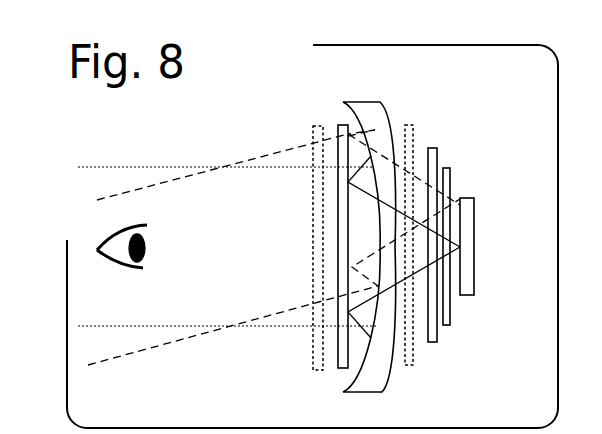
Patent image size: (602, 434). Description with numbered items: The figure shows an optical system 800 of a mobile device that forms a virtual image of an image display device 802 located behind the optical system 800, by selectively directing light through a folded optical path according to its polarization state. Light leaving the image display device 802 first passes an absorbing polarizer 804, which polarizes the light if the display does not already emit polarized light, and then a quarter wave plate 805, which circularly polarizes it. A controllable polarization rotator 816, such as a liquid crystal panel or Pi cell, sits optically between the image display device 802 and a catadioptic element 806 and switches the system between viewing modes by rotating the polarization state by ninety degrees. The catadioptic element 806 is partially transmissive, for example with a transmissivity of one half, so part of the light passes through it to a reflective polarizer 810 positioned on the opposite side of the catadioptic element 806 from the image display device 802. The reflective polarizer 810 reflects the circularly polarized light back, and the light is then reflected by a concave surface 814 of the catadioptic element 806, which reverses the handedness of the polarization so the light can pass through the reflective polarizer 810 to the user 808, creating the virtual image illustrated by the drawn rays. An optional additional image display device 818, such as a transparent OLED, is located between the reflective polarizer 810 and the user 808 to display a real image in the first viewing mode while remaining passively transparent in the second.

The optical system 800 is at (444, 116).
The image display device 802 is at (474, 245).
The absorbing polarizer 804 is at (450, 185).
The quarter wave plate 805 is at (437, 158).
The catadioptic element 806 is at (383, 370).
The user 808 is at (116, 262).
The reflective polarizer 810 is at (343, 369).
The concave surface 814 is at (370, 305).
The controllable polarization rotator 816 is at (409, 124).
The additional image display device 818 is at (316, 221).